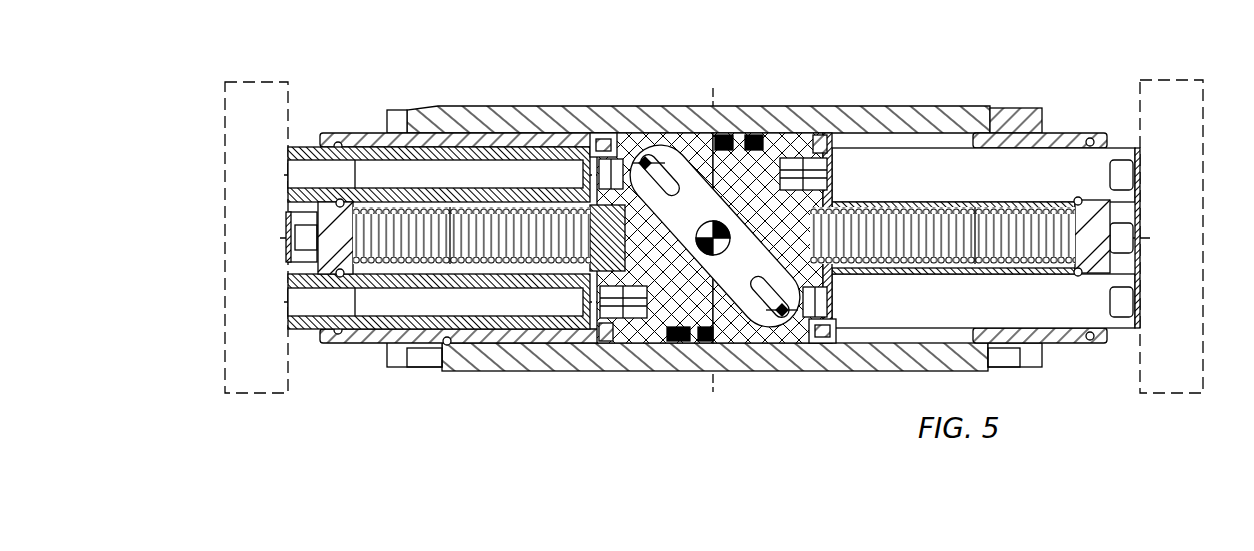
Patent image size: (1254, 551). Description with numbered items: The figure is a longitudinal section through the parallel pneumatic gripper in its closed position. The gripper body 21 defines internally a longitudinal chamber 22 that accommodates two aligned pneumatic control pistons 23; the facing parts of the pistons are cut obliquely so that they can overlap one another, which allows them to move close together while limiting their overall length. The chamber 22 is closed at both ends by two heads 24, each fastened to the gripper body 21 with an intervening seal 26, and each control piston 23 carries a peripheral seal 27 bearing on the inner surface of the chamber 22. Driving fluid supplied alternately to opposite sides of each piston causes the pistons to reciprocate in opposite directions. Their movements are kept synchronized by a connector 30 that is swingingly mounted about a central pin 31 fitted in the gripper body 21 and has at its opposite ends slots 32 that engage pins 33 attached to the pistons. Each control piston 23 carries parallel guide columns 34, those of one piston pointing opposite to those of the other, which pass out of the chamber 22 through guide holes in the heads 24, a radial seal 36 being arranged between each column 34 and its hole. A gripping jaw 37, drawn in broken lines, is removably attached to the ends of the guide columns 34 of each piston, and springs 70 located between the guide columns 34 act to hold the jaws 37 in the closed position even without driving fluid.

The gripper body 21 is at (592, 362).
The longitudinal chamber 22 is at (920, 143).
The pneumatic control pistons 23 is at (786, 132).
The heads 24 is at (430, 104).
The seal 26 is at (448, 345).
The peripheral seal 27 is at (611, 140).
The connector 30 is at (750, 307).
The central pin 31 is at (716, 221).
The slots 32 is at (672, 166).
The pins 33 is at (645, 157).
The guide columns 34 is at (521, 147).
The radial seal 36 is at (343, 144).
The gripping jaw 37 is at (226, 158).
The springs 70 is at (423, 251).